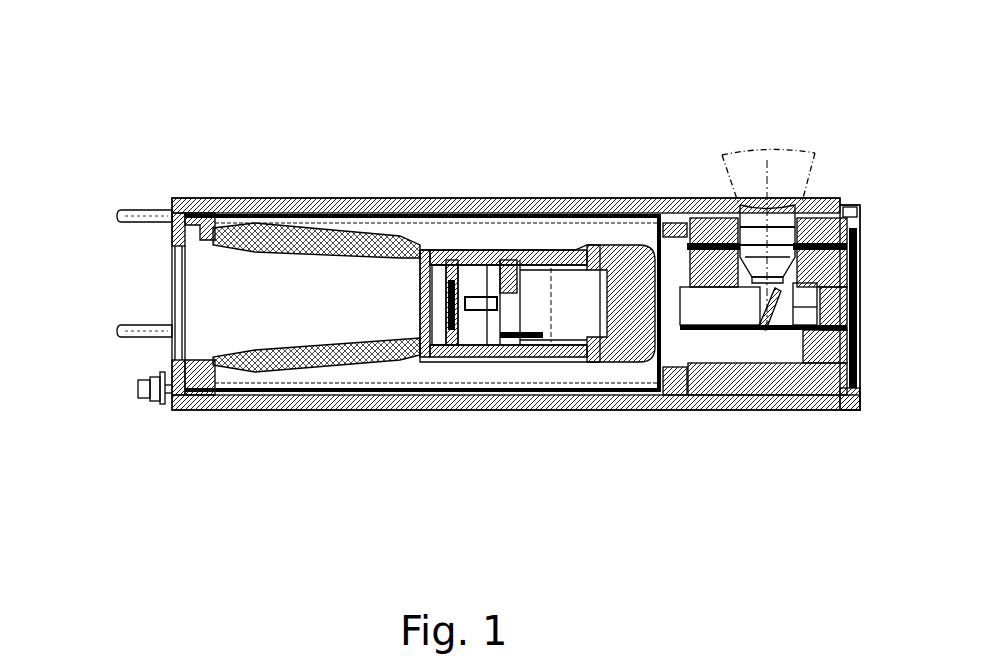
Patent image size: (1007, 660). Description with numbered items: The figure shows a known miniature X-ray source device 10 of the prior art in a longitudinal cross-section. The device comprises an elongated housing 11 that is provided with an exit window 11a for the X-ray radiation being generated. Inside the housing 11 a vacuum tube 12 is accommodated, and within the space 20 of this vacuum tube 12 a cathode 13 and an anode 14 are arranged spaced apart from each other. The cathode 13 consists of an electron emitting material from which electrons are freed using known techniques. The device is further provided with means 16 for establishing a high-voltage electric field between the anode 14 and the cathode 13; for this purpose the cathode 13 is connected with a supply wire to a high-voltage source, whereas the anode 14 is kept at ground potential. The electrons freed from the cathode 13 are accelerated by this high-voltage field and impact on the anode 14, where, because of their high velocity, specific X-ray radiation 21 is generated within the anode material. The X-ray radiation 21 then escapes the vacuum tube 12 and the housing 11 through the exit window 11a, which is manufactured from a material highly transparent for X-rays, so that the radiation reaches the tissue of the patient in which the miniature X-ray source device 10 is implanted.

The miniature X-ray source device 10 is at (504, 122).
The housing 11 is at (307, 200).
The exit window 11a is at (754, 215).
The vacuum tube 12 is at (445, 212).
The cathode 13 is at (510, 335).
The anode 14 is at (776, 345).
The means for establishing a high-voltage electric field 16 is at (118, 222).
The space 20 is at (645, 320).
The X-ray radiation 21 is at (767, 167).